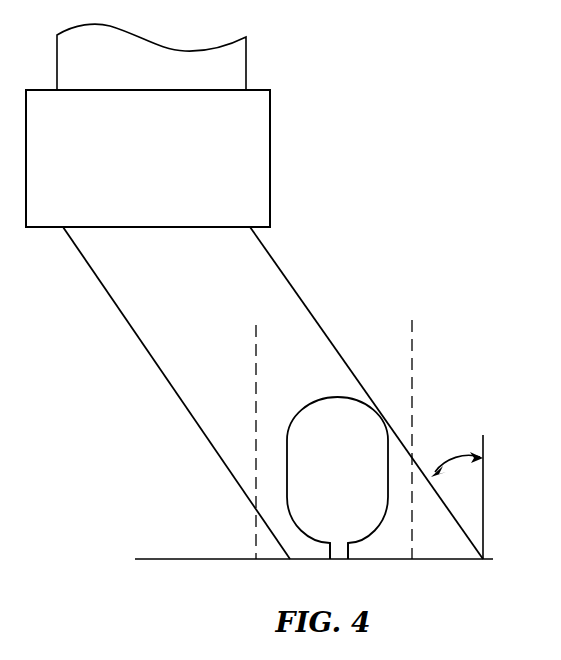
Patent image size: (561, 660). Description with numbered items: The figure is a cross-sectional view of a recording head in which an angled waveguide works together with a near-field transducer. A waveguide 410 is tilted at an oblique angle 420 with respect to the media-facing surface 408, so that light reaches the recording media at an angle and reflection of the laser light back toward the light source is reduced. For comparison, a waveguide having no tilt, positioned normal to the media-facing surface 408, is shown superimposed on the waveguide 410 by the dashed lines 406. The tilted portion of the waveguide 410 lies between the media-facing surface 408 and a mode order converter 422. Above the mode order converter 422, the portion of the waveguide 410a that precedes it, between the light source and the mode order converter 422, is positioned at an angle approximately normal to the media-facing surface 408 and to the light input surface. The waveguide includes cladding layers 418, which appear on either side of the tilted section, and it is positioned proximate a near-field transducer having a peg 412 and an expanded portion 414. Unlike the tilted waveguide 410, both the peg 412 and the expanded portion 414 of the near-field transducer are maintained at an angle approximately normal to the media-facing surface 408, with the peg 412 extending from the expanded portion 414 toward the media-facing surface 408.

The dashed lines 406 is at (412, 320).
The media-facing surface 408 is at (147, 560).
The waveguide 410 is at (273, 393).
The portion of the waveguide prior to the mode order converter 410a is at (232, 73).
The peg 412 is at (337, 556).
The expanded portion 414 is at (337, 478).
The cladding layers 418 is at (308, 433).
The oblique angle 420 is at (458, 462).
The mode order converter 422 is at (148, 158).